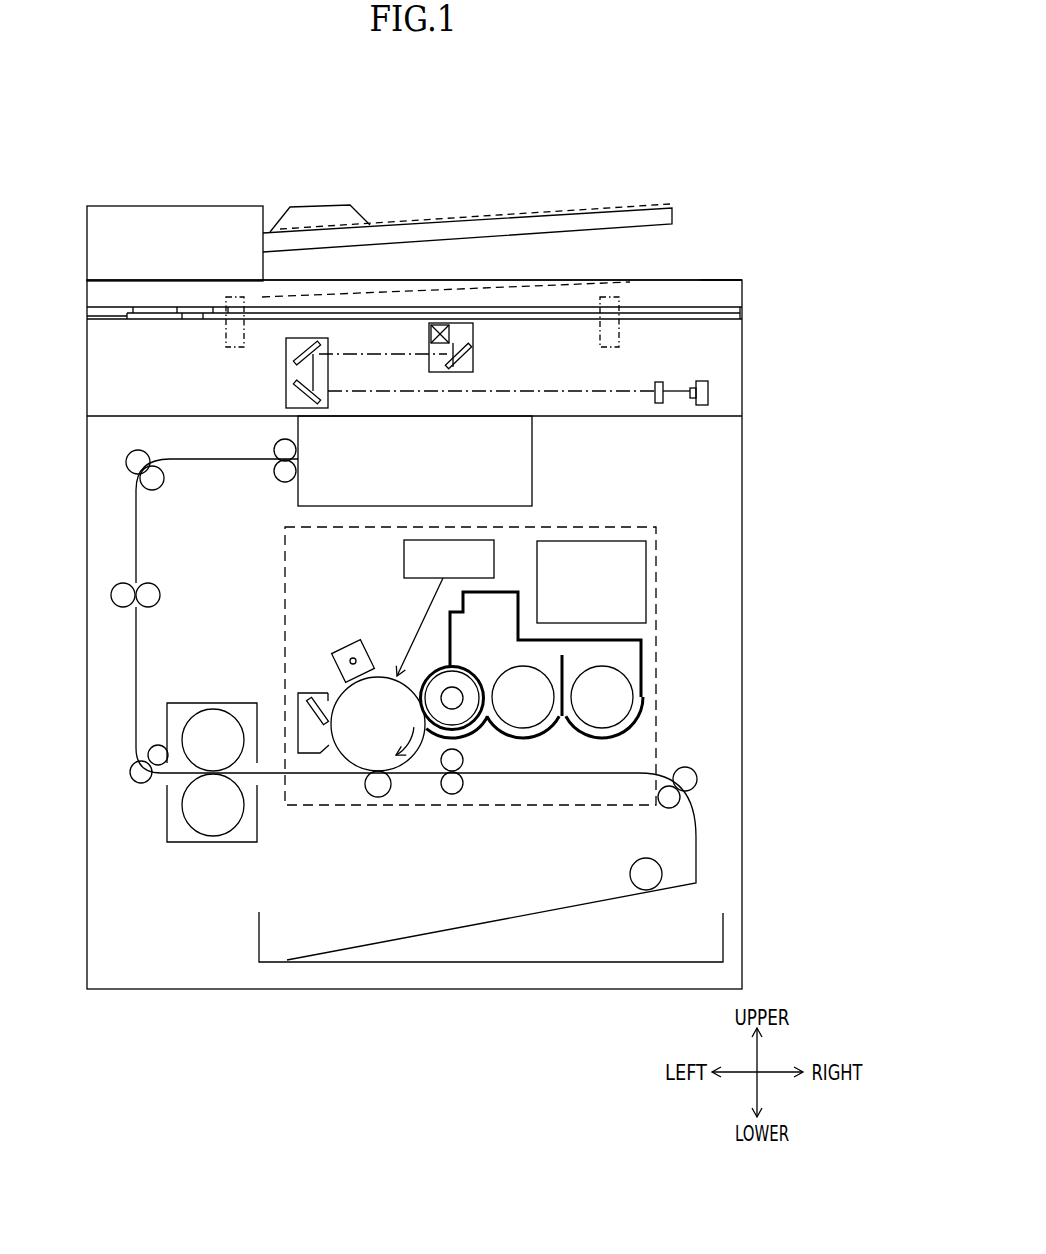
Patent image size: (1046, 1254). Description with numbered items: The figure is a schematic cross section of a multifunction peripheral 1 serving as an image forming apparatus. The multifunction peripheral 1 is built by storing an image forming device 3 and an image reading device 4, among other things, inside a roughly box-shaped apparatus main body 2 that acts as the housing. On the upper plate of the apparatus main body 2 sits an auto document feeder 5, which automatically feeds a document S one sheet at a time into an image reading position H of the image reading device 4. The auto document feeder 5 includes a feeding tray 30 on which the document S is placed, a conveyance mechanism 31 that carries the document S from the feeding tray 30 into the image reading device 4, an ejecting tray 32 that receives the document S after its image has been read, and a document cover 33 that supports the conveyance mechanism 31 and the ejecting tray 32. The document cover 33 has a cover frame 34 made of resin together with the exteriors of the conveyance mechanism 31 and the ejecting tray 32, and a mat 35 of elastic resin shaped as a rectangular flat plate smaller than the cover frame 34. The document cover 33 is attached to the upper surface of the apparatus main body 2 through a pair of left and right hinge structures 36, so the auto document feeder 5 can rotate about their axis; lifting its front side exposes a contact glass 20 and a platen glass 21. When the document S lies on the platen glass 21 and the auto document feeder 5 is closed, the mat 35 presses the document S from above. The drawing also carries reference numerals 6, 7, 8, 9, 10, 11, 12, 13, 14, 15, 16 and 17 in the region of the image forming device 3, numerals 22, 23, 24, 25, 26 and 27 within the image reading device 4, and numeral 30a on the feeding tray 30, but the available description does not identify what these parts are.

The multifunction peripheral 1 is at (703, 105).
The apparatus main body 2 is at (742, 450).
The image forming device 3 is at (676, 512).
The image reading device 4 is at (742, 381).
The auto document feeder 5 is at (379, 180).
The sheet feed tray 6 is at (723, 934).
The sheet feed roller 7 is at (696, 838).
The process cartridge 8 is at (656, 650).
The fixing unit 9 is at (178, 853).
The controller 10 is at (455, 504).
The toner container 11 is at (646, 565).
The photosensitive drum 12 is at (342, 757).
The charger 13 is at (350, 640).
The exposure unit 14 is at (404, 552).
The developing unit 15 is at (490, 720).
The transfer roller 16 is at (378, 797).
The cleaning unit 17 is at (300, 693).
The contact glass 20 is at (130, 318).
The platen glass 21 is at (698, 319).
The carriage 22 is at (487, 338).
The mirror unit 23 is at (286, 375).
The lens 24 is at (655, 389).
The image sensor 25 is at (702, 380).
The light source 26 is at (430, 330).
The mirror 27 is at (468, 355).
The feeding tray 30 is at (655, 207).
The document guide 30a is at (307, 206).
The conveyance mechanism 31 is at (180, 206).
The ejecting tray 32 is at (630, 281).
The document cover 33 is at (727, 280).
The cover frame 34 is at (743, 280).
The mat 35 is at (488, 308).
The hinge structures 36 is at (243, 298).
The document S is at (470, 212).
The image reading position H is at (157, 327).